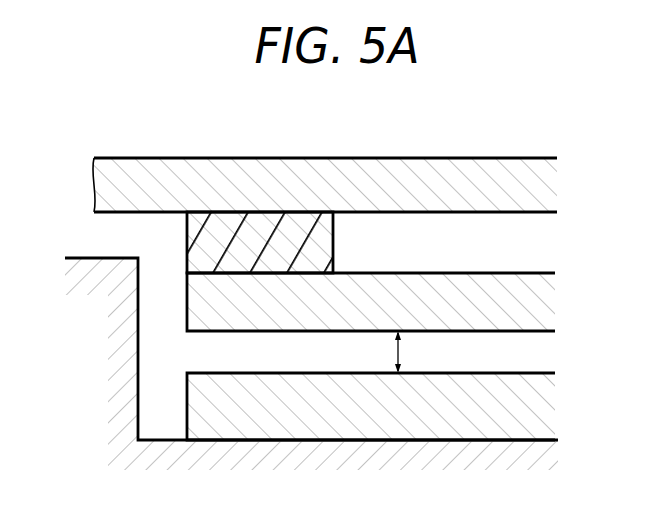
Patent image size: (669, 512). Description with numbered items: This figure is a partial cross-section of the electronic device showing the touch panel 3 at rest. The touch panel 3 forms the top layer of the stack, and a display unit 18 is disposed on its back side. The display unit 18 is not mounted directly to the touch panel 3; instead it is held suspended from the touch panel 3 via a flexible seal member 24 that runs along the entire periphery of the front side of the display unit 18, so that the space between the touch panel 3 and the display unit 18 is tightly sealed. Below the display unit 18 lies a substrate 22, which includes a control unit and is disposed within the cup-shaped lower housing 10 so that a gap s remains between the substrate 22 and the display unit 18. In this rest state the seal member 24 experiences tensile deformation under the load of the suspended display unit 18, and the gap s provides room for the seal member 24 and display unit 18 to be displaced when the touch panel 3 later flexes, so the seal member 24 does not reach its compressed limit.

The touch panel 3 is at (484, 185).
The seal member 24 is at (244, 240).
The display unit 18 is at (503, 305).
The substrate 22 is at (507, 410).
The lower housing 10 is at (118, 336).
The gap s is at (407, 352).